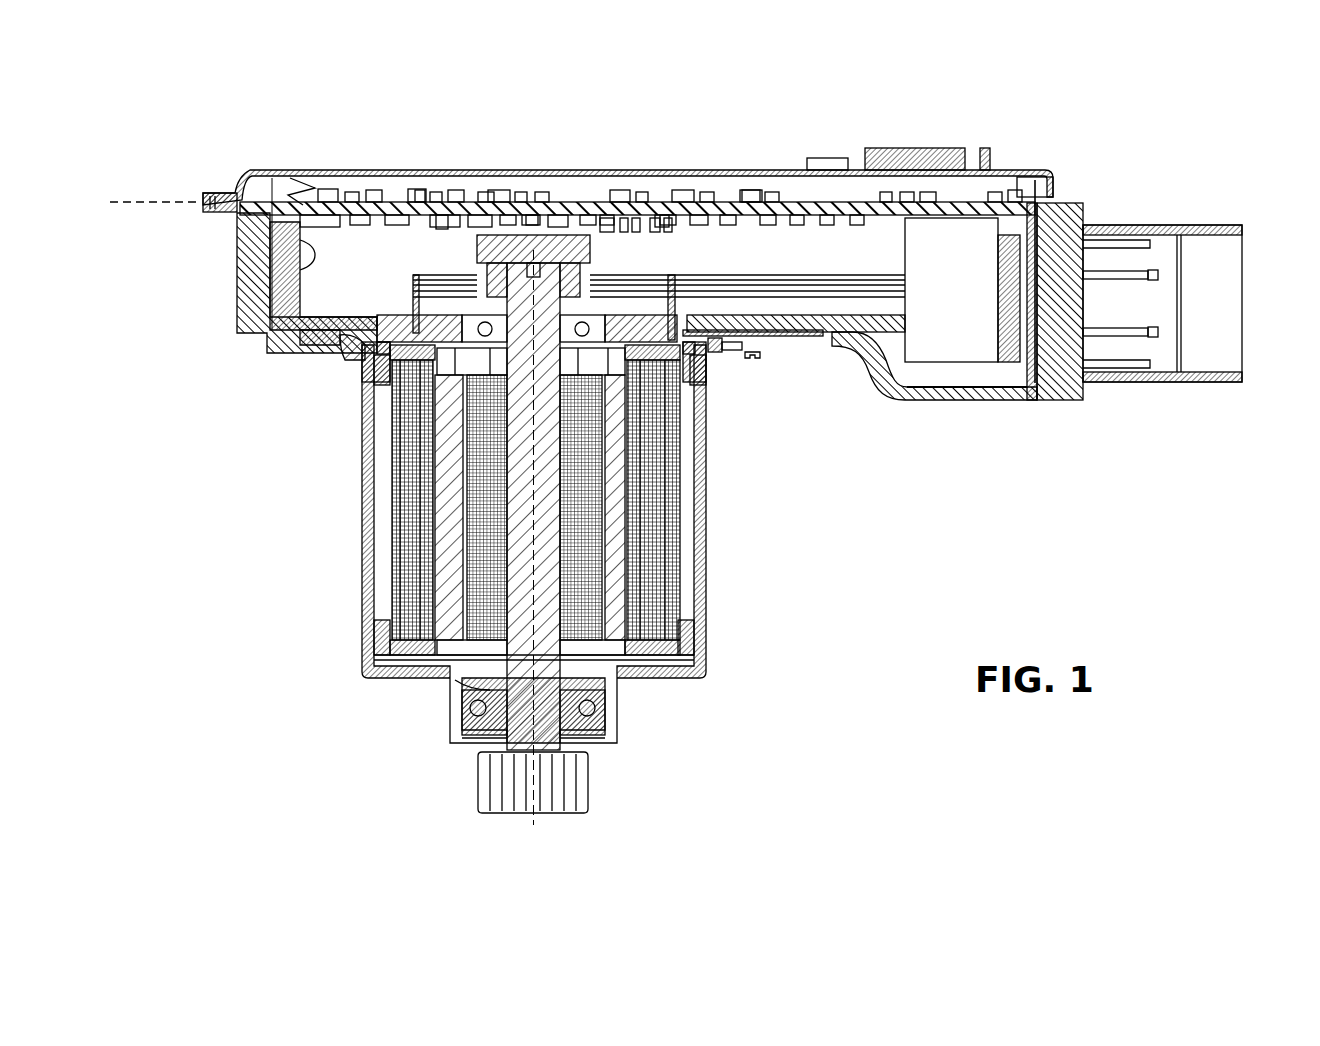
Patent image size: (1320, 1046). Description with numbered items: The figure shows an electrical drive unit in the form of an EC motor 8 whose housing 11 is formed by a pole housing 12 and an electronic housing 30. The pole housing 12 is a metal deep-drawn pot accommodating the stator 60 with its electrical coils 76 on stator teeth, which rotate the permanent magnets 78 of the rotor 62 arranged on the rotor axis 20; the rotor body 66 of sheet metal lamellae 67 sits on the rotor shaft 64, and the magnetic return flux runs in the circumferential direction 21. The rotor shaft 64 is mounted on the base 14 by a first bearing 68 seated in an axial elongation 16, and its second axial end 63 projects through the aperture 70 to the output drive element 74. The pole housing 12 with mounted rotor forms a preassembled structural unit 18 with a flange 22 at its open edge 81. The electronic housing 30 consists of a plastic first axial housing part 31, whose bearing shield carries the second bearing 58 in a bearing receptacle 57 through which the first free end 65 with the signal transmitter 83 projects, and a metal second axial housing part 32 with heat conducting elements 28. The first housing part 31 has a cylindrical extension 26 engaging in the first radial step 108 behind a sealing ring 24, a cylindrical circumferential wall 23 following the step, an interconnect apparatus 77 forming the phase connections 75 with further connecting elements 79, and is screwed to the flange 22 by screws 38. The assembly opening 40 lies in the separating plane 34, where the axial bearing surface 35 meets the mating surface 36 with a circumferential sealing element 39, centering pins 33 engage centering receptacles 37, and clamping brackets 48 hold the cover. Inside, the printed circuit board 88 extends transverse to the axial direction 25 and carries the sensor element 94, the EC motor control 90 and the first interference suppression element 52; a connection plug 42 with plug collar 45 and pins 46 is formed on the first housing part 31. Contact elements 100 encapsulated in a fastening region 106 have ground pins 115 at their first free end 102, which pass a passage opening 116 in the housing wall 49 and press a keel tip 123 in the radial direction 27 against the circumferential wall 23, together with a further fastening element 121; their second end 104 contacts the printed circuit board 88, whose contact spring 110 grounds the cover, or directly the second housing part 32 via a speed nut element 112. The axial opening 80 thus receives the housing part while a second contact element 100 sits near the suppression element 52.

The EC motor 8 is at (620, 148).
The housing 11 is at (240, 356).
The pole housing 12 is at (706, 570).
The base 14 is at (645, 678).
The axial elongation 16 is at (458, 705).
The preassembled structural unit 18 is at (330, 511).
The rotor axis 20 is at (540, 705).
The circumferential direction 21 is at (432, 822).
The flange 22 is at (285, 345).
The cylindrical circumferential wall 23 is at (375, 382).
The sealing ring 24 is at (360, 362).
The axial direction 25 is at (534, 810).
The cylindrical extension 26 is at (735, 360).
The radial direction 27 is at (795, 108).
The heat conducting elements 28 is at (985, 150).
The electronic housing 30 is at (200, 206).
The first axial housing part 31 is at (262, 293).
The second axial housing part 32 is at (303, 183).
The centering pins 33 is at (205, 198).
The separating plane 34 is at (147, 200).
The axial bearing surface 35 is at (262, 215).
The mating surface 36 is at (232, 207).
The centering receptacles 37 is at (222, 210).
The screws 38 is at (762, 356).
The circumferential sealing element 39 is at (225, 198).
The assembly opening 40 is at (242, 265).
The connection plug 42 is at (1068, 300).
The plug collar 45 is at (1210, 228).
The pins 46 is at (1160, 333).
The clamping brackets 48 is at (828, 160).
The housing wall 49 is at (385, 225).
The first interference suppression element 52 is at (955, 325).
The bearing receptacle 57 is at (460, 685).
The second bearing 58 is at (445, 290).
The stator 60 is at (706, 540).
The rotor 62 is at (680, 598).
The second axial end 63 is at (525, 760).
The rotor shaft 64 is at (700, 516).
The first free end 65 is at (560, 265).
The rotor body 66 is at (392, 622).
The sheet metal lamellae 67 is at (430, 570).
The first bearing 68 is at (600, 720).
The aperture 70 is at (492, 742).
The output drive element 74 is at (560, 775).
The phase connections 75 is at (440, 240).
The electrical coils 76 is at (395, 527).
The interconnect apparatus 77 is at (660, 300).
The permanent magnets 78 is at (415, 542).
The contact pin 79 is at (412, 312).
The axial opening 80 is at (725, 345).
The open edge 81 is at (390, 330).
The signal transmitter 83 is at (488, 228).
The printed circuit board 88 is at (755, 222).
The EC motor control 90 is at (395, 222).
The sensor element 94 is at (528, 298).
The contact elements 100 is at (258, 328).
The first free end 102 is at (395, 312).
The second end 104 is at (272, 230).
The fastening region 106 is at (318, 347).
The first radial step 108 is at (347, 350).
The contact spring 110 is at (300, 185).
The speed nut element 112 is at (1056, 188).
The ground pins 115 is at (338, 345).
The passage opening 116 is at (700, 330).
The fastening element 121 is at (720, 400).
The keel tip 123 is at (370, 450).